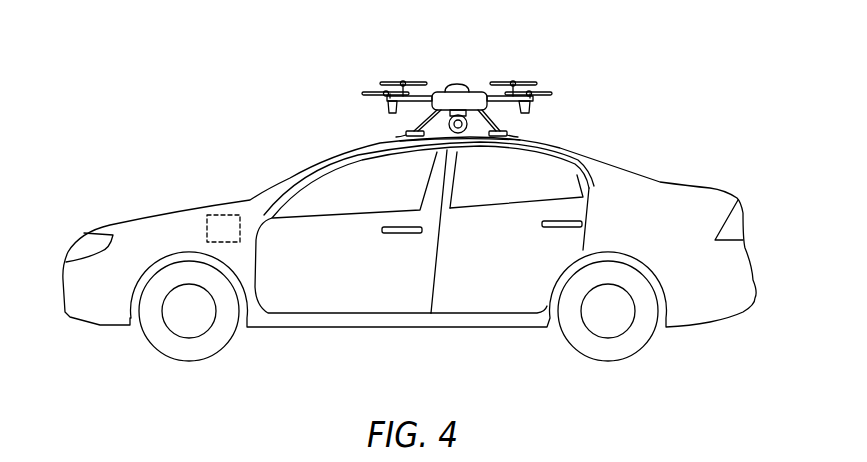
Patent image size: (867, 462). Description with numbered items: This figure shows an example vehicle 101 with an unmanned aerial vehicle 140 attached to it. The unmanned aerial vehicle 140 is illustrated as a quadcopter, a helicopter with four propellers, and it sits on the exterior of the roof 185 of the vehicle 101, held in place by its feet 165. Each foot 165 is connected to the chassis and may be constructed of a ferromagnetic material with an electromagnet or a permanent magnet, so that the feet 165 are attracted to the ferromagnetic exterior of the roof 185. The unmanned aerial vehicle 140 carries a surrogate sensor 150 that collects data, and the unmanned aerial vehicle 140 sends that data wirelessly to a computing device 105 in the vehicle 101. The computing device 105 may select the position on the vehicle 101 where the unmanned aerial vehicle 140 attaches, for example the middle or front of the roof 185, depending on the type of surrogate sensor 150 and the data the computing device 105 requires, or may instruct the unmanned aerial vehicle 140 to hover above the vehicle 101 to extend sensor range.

The vehicle 101 is at (256, 135).
The computing device 105 is at (213, 214).
The unmanned aerial vehicle 140 is at (490, 60).
The surrogate sensor 150 is at (406, 131).
The foot 165 is at (406, 135).
The roof 185 is at (530, 139).